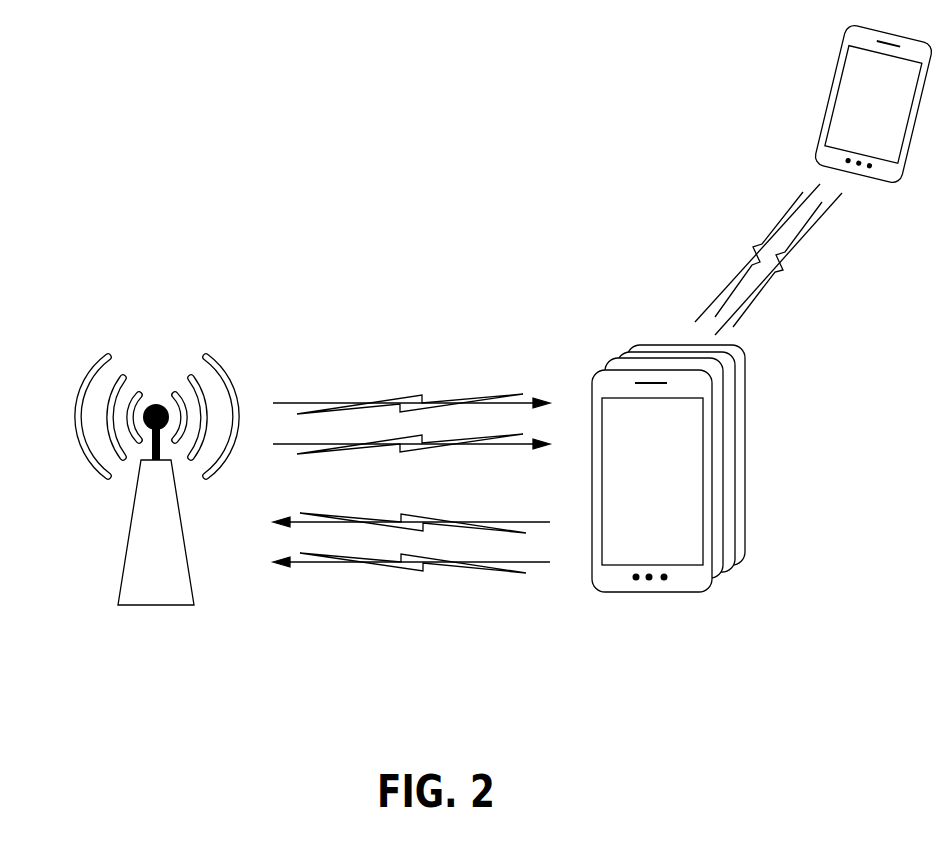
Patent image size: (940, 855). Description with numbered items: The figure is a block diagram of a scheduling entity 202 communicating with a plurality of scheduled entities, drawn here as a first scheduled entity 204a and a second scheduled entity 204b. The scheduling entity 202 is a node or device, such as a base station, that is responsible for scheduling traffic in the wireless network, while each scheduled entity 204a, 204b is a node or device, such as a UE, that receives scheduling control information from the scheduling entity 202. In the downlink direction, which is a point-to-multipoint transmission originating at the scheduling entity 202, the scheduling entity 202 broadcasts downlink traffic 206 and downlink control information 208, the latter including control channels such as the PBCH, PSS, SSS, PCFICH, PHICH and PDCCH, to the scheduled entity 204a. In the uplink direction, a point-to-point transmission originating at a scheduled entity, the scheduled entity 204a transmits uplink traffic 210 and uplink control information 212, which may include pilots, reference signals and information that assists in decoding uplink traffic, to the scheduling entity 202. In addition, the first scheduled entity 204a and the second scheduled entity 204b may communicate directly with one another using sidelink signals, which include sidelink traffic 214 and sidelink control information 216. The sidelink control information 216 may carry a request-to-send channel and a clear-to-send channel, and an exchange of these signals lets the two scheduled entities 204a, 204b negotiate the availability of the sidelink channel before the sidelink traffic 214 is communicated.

The scheduling entity 202 is at (187, 606).
The first scheduled entity 204a is at (652, 594).
The second scheduled entity 204b is at (830, 108).
The downlink traffic 206 is at (411, 395).
The downlink control information 208 is at (411, 435).
The uplink traffic 210 is at (411, 513).
The uplink control information 212 is at (411, 553).
The sidelink traffic 214 is at (732, 253).
The sidelink control information 216 is at (796, 264).